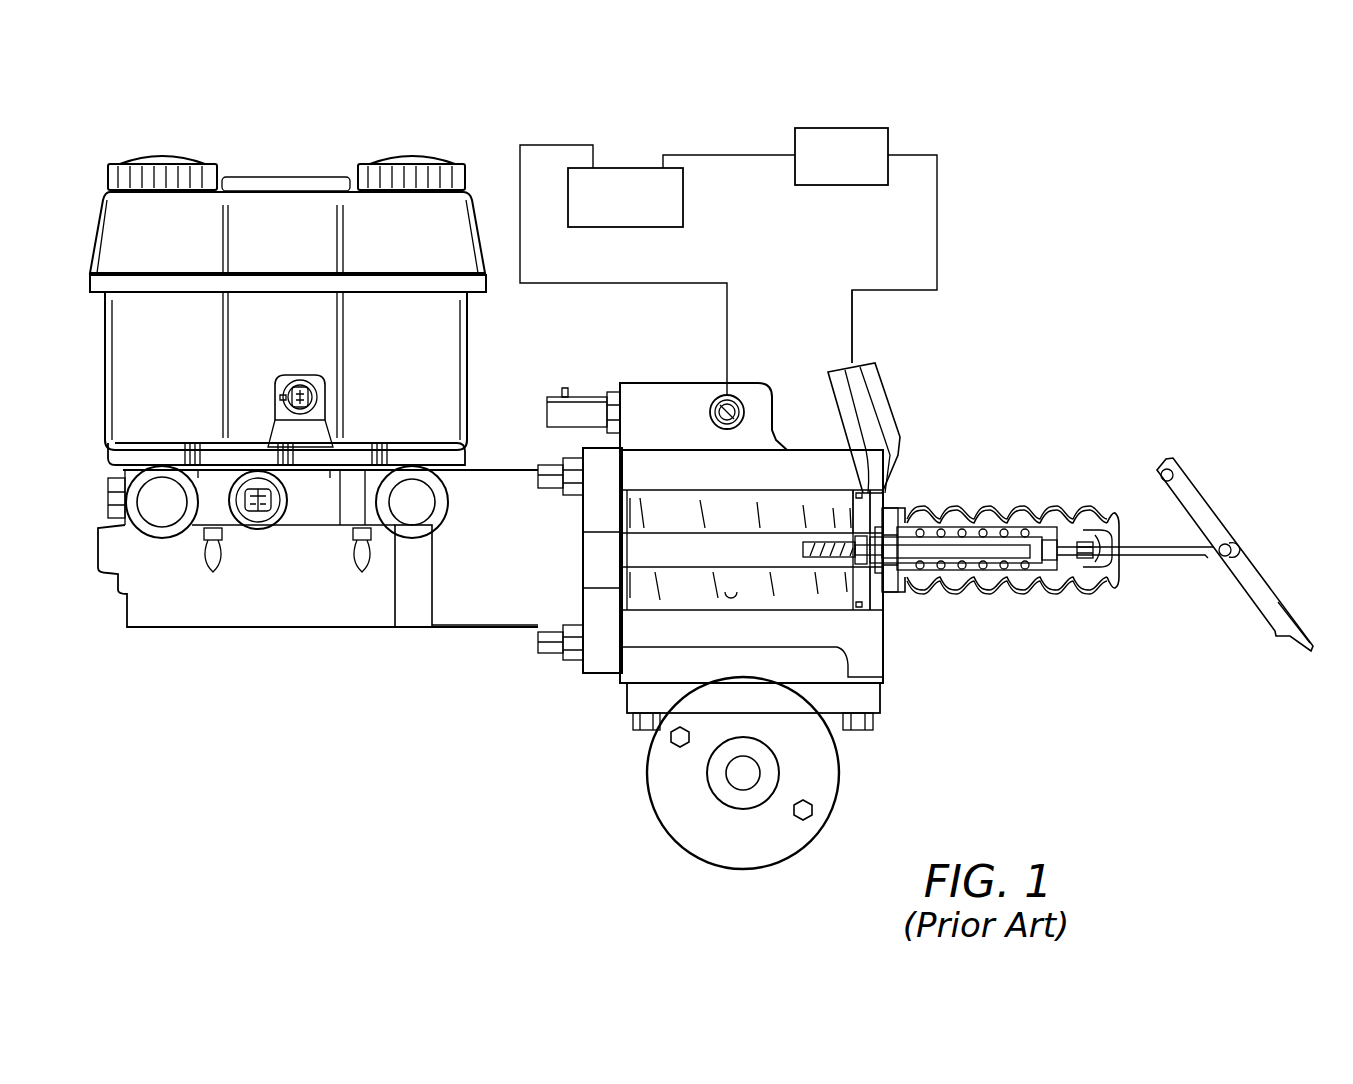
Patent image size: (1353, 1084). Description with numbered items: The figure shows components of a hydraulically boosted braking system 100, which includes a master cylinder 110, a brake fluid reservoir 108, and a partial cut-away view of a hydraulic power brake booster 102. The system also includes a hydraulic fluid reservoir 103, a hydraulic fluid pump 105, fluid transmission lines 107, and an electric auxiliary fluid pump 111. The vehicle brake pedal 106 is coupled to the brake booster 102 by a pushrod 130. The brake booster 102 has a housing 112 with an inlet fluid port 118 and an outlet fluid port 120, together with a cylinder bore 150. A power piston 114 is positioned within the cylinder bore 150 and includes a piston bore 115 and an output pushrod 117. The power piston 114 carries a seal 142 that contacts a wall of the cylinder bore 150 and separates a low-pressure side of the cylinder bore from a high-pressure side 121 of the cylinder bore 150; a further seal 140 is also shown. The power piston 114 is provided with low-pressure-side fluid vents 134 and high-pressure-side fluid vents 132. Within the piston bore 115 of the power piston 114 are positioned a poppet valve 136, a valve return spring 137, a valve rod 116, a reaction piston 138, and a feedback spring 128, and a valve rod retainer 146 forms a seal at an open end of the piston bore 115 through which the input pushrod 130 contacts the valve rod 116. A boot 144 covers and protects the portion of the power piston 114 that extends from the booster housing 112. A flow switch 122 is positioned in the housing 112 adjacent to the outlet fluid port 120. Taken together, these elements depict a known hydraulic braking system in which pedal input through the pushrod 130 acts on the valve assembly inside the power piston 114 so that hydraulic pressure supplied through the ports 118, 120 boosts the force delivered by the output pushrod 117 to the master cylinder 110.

The hydraulically boosted braking system 100 is at (336, 110).
The hydraulic power brake booster 102 is at (538, 743).
The hydraulic fluid reservoir 103 is at (655, 178).
The hydraulic fluid pump 105 is at (808, 142).
The vehicle brake pedal 106 is at (1257, 583).
The fluid transmission lines 107 is at (535, 143).
The brake fluid reservoir 108 is at (287, 208).
The master cylinder 110 is at (283, 602).
The electric auxiliary fluid pump 111 is at (733, 848).
The housing 112 is at (790, 455).
The power piston 114 is at (870, 675).
The piston bore 115 is at (1068, 580).
The valve rod 116 is at (995, 547).
The output pushrod 117 is at (682, 552).
The inlet fluid port 118 is at (872, 477).
The outlet fluid port 120 is at (725, 386).
The high-pressure side 121 is at (886, 622).
The flow switch 122 is at (578, 395).
The feedback spring 128 is at (962, 530).
The pushrod 130 is at (1140, 548).
The high-pressure-side fluid vents 132 is at (880, 512).
The low-pressure-side fluid vents 134 is at (846, 527).
The poppet valve 136 is at (850, 576).
The valve return spring 137 is at (807, 557).
The reaction piston 138 is at (890, 570).
The seal 140 is at (880, 580).
The seal 142 is at (870, 488).
The boot 144 is at (1050, 523).
The valve rod retainer 146 is at (1087, 532).
The cylinder bore 150 is at (730, 600).